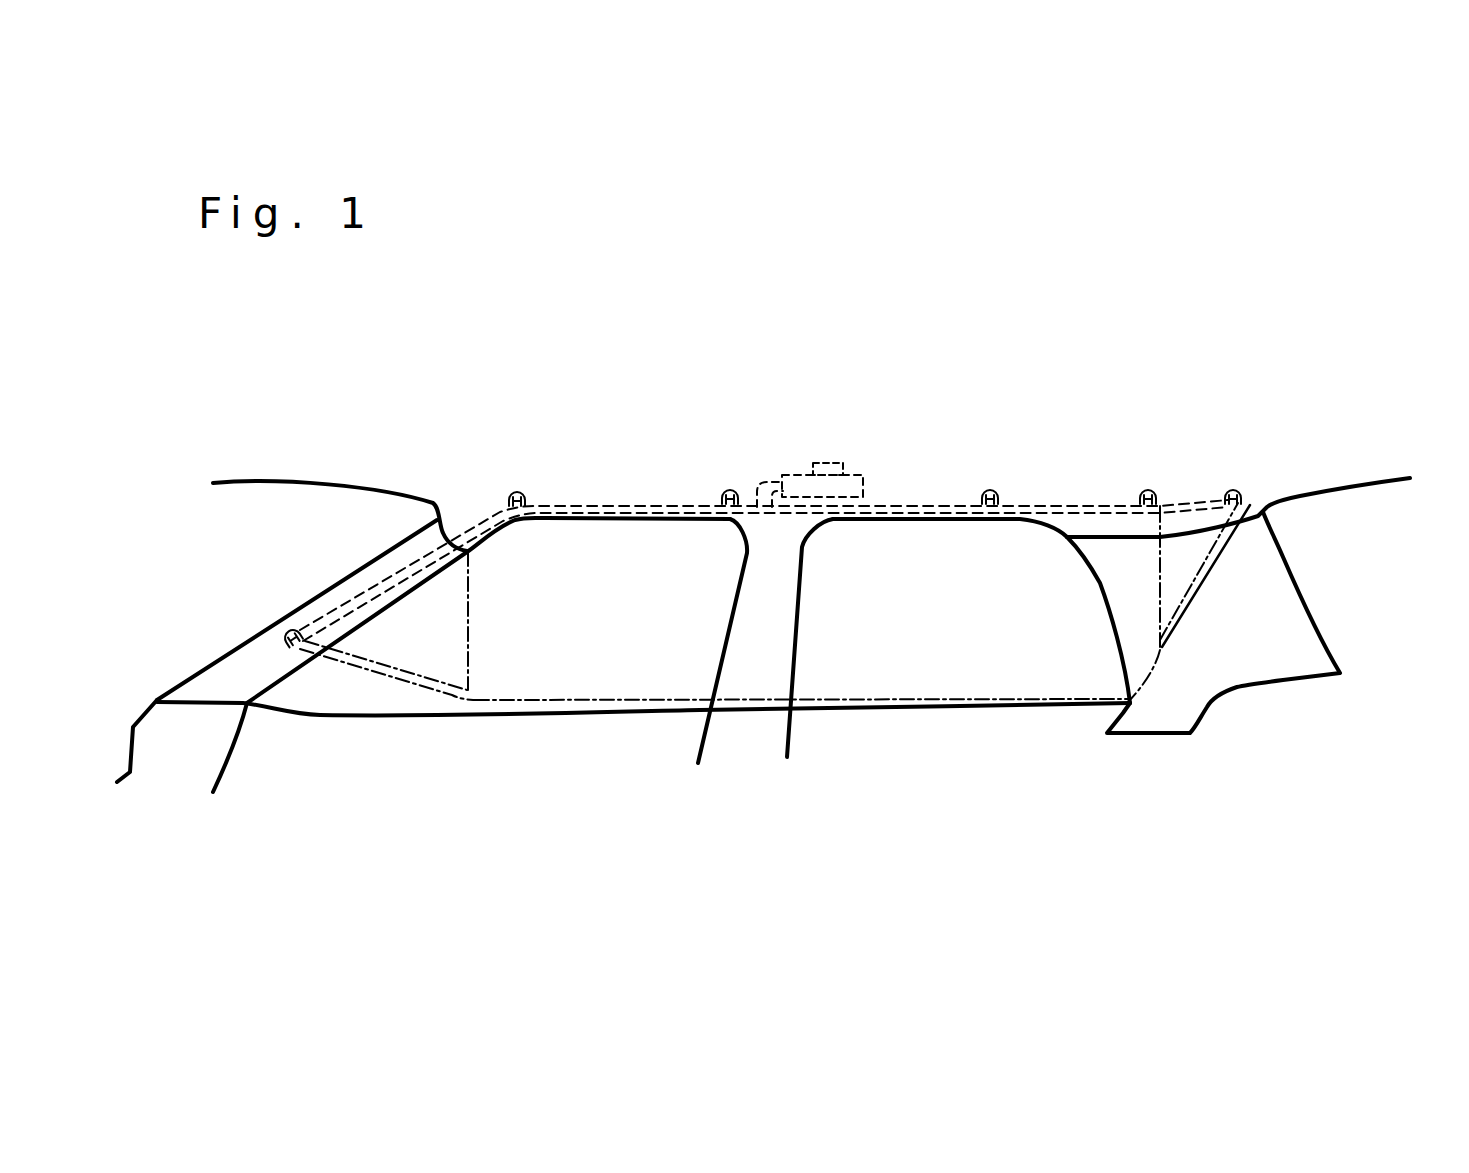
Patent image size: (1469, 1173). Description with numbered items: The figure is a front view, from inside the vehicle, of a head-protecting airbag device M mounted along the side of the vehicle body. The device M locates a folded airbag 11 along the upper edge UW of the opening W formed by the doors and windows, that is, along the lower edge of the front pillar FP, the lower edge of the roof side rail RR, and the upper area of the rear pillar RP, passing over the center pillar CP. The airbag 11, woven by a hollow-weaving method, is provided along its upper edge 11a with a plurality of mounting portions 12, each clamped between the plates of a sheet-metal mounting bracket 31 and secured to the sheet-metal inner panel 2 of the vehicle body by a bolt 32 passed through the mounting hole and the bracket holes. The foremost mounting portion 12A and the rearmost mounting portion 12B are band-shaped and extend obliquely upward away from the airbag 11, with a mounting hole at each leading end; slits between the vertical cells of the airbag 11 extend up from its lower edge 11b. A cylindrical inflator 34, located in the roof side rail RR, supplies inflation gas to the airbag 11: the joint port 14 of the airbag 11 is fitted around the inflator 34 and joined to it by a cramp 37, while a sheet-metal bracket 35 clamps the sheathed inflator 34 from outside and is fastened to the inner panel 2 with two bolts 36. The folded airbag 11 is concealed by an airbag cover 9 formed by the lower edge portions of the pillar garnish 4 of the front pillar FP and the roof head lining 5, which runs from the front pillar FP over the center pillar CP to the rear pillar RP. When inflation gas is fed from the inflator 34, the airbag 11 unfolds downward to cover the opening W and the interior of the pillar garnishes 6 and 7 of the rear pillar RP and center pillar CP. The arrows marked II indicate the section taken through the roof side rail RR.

The inner panel 2 is at (610, 453).
The pillar garnish 4 is at (247, 553).
The roof head lining 5 is at (580, 460).
The pillar garnish 6 is at (1280, 653).
The pillar garnish 7 is at (762, 675).
The airbag cover 9 is at (612, 520).
The airbag 11 is at (1067, 507).
The upper edge of the airbag 11a is at (963, 527).
The lower edge of the airbag 11b is at (850, 692).
The mounting portion 12 is at (507, 500).
The foremost mounting portion 12A is at (362, 672).
The rearmost mounting portion 12B is at (1203, 597).
The joint port 14 is at (760, 483).
The mounting bracket 31 is at (287, 640).
The bolt 32 is at (514, 500).
The inflator 34 is at (848, 473).
The bracket 35 is at (835, 497).
The bolt 36 is at (836, 462).
The cramp 37 is at (787, 477).
The front pillar FP is at (232, 593).
The center pillar CP is at (710, 633).
The rear pillar RP is at (1310, 597).
The roof side rail RR is at (677, 457).
The upper edge of the opening UW is at (893, 525).
The opening W is at (497, 707).
The head-protecting airbag device M is at (913, 407).
The section line II is at (988, 462).